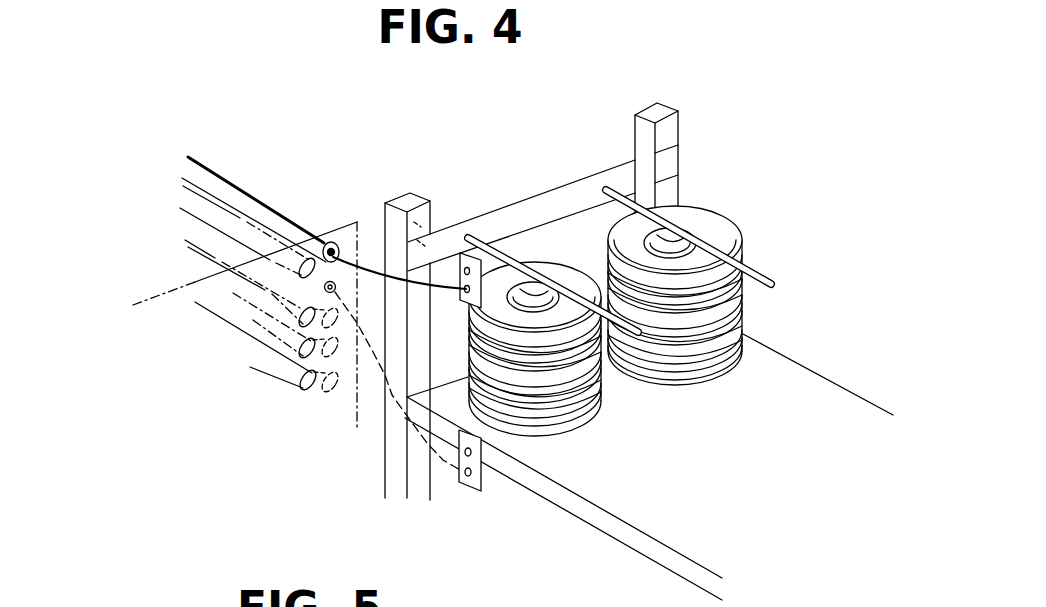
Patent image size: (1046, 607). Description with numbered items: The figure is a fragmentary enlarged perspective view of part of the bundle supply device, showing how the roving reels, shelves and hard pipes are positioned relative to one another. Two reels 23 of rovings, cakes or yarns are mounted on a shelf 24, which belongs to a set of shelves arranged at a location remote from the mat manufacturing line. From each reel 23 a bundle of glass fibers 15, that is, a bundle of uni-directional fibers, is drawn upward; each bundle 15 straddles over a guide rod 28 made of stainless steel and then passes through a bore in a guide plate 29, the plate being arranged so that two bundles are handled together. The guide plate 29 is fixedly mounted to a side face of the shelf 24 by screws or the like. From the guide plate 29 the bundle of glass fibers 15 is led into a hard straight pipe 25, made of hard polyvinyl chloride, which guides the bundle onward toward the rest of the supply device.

The bundle of glass fibers 15 is at (582, 243).
The reel of rovings, cakes or yarns 23 is at (553, 441).
The shelf 24 is at (660, 532).
The hard straight pipe 25 is at (261, 208).
The guide rod 28 is at (766, 283).
The guide plate 29 is at (460, 270).